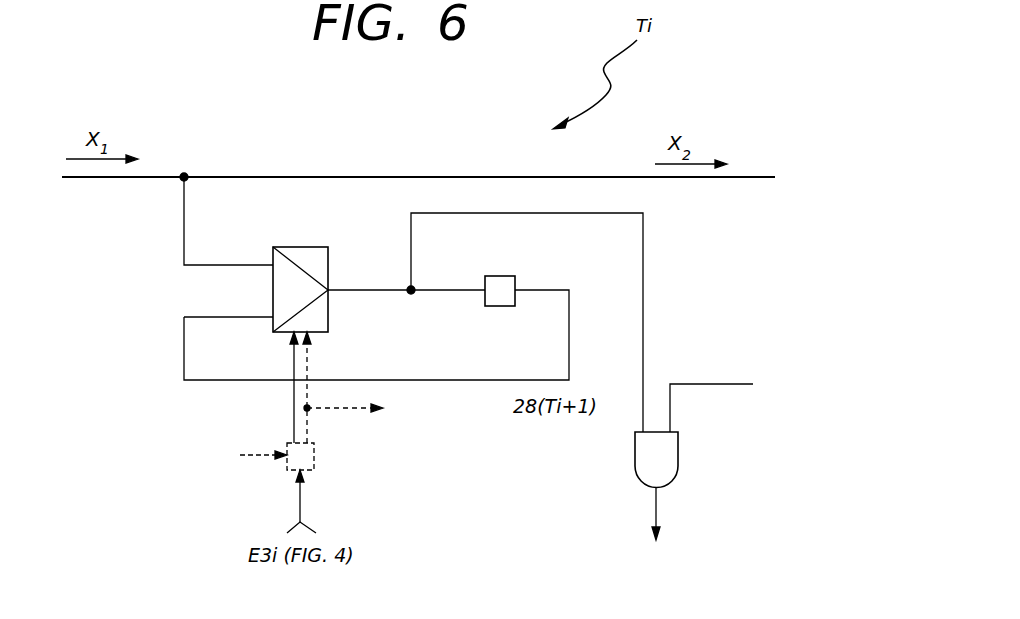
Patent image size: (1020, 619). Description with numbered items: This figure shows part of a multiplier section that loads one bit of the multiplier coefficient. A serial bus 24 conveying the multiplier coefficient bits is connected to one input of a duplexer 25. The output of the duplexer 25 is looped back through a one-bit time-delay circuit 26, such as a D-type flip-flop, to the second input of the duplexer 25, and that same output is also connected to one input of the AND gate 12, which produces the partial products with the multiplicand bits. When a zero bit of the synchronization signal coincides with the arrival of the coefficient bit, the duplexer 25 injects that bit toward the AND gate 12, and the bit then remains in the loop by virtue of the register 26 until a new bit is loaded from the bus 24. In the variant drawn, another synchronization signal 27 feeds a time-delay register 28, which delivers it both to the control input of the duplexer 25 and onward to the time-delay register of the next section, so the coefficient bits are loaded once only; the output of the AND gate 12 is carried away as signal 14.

The AND gate 12 is at (669, 467).
The output signal to FIG. 4 14 is at (712, 524).
The serial bus 24 is at (172, 177).
The duplexer 25 is at (330, 310).
The one-bit time-delay circuit 26 is at (498, 276).
The synchronization signal 27 is at (240, 455).
The time-delay register 28 is at (314, 456).